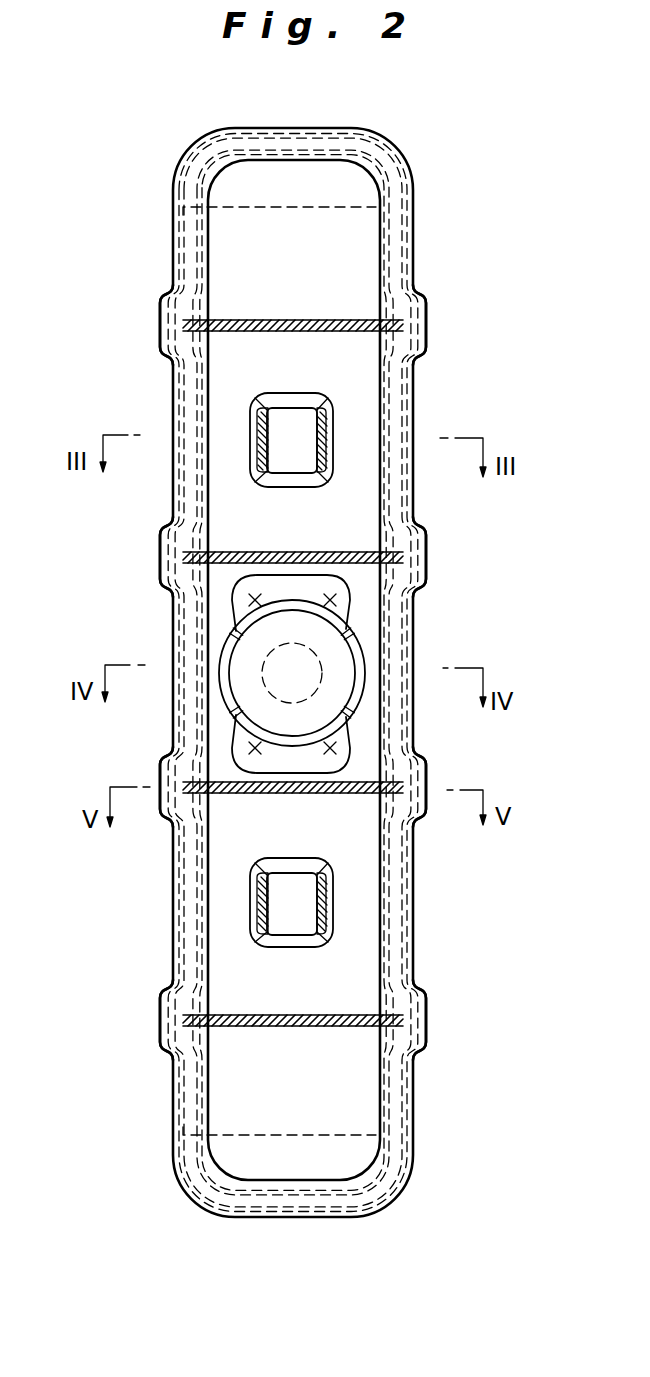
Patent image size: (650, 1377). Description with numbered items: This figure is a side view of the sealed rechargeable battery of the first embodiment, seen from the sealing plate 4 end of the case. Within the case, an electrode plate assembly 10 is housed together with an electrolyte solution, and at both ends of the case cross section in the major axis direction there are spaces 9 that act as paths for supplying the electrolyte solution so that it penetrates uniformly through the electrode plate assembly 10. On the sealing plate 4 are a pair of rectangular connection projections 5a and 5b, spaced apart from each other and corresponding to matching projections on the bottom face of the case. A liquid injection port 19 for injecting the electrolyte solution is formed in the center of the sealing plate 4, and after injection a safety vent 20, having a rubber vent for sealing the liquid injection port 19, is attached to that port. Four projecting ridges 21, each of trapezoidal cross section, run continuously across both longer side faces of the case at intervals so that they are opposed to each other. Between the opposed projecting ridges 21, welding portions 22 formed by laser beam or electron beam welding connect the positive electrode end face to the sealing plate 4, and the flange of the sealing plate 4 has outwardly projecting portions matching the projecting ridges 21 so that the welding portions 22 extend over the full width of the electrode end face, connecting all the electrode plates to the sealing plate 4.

The sealing plate 4 is at (302, 283).
The connection projection 5a is at (300, 433).
The connection projection 5b is at (305, 912).
The space 9 is at (278, 190).
The electrode plate assembly 10 is at (335, 237).
The liquid injection port 19 is at (265, 662).
The safety vent 20 is at (345, 660).
The projecting ridge 21 is at (427, 318).
The welding portion 22 is at (340, 320).